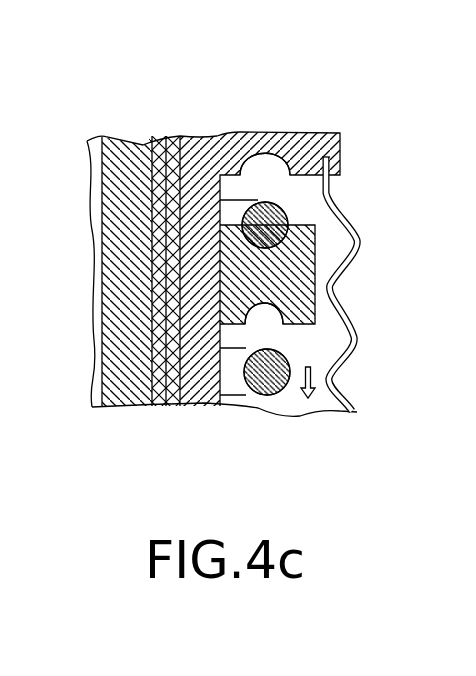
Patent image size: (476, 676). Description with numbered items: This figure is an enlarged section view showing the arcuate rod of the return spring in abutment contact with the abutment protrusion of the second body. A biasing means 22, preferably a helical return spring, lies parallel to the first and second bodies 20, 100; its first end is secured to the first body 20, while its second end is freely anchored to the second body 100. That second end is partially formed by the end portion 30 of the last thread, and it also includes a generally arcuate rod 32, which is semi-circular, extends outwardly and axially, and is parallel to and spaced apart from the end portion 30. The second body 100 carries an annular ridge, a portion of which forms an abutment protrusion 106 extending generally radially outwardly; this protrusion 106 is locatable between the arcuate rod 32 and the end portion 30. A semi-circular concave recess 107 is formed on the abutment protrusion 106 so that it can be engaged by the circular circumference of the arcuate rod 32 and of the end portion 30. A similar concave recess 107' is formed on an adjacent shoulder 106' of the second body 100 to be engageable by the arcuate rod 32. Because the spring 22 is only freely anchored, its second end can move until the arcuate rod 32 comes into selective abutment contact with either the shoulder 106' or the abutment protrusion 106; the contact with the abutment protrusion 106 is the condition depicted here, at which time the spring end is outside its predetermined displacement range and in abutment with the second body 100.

The first body 20 is at (99, 105).
The second body 100 is at (232, 113).
The abutment protrusion 106 is at (371, 284).
The shoulder 106' is at (362, 165).
The concave recess 107 is at (353, 316).
The concave recess 107' is at (339, 180).
The arcuate rod 32 is at (315, 238).
The end portion of a last thread 30 is at (287, 363).
The biasing means 22 is at (242, 383).